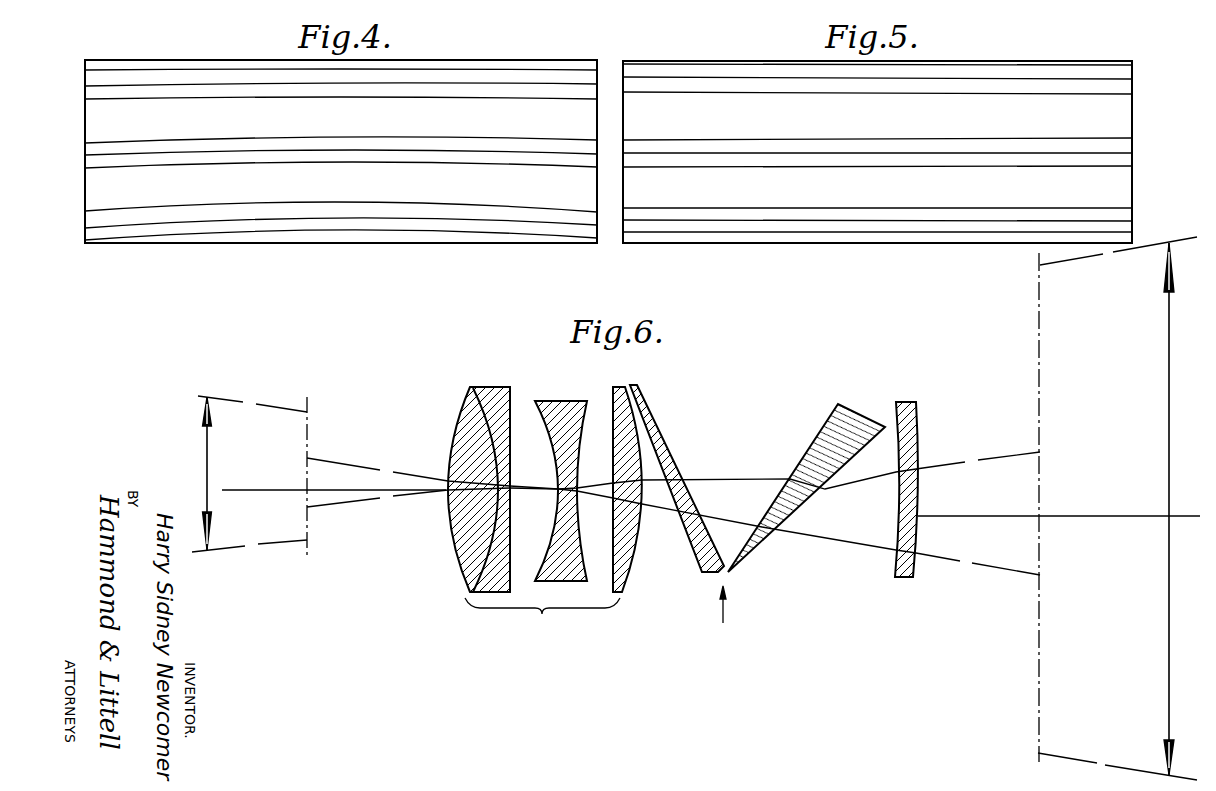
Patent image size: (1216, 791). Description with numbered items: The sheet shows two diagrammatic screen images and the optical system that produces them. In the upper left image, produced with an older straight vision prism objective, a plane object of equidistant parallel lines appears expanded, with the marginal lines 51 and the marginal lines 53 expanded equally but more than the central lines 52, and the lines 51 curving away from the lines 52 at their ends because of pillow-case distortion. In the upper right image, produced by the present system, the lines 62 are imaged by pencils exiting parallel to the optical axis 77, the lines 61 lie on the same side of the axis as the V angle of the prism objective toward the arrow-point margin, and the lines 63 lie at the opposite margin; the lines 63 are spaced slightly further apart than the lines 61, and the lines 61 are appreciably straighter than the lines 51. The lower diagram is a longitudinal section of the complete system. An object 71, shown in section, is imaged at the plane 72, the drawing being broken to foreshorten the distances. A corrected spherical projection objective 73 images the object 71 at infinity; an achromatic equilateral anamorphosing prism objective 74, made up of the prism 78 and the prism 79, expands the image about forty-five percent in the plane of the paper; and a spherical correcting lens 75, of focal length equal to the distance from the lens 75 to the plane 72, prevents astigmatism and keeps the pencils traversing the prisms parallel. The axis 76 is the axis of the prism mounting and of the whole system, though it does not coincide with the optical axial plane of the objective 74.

In FIG. 4, the marginal lines 51 is at (326, 221).
In FIG. 4, the central lines 52 is at (327, 152).
In FIG. 4, the marginal lines 53 is at (327, 84).
In FIG. 5, the lines 61 is at (892, 220).
In FIG. 5, the lines 62 is at (892, 152).
In FIG. 5, the lines 63 is at (892, 79).
In FIG. 6, the object 71 is at (205, 450).
In FIG. 6, the image 72 is at (1165, 700).
In FIG. 6, the spherical projection objective 73 is at (545, 512).
In FIG. 6, the anamorphosing prism objective 74 is at (726, 618).
In FIG. 6, the spherical correcting lens 75 is at (905, 578).
In FIG. 6, the axis of the mounting of the prism objective 76 is at (252, 490).
In FIG. 6, the optical axis of the system 77 is at (1073, 518).
In FIG. 6, the prism 78 is at (762, 542).
In FIG. 6, the prism 79 is at (697, 566).